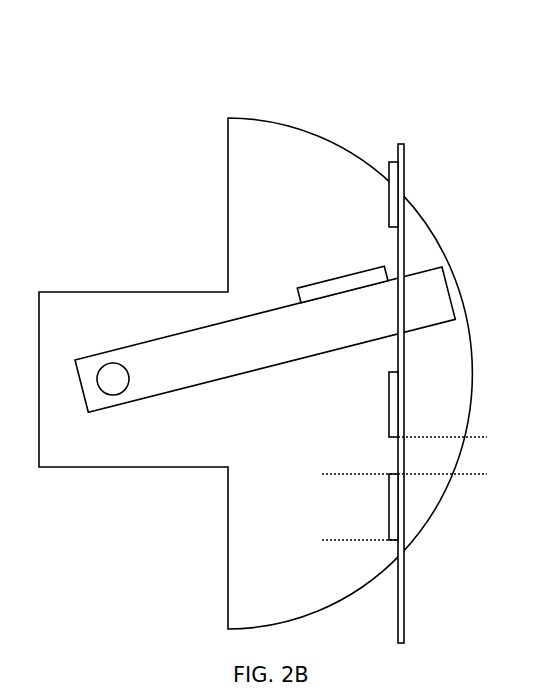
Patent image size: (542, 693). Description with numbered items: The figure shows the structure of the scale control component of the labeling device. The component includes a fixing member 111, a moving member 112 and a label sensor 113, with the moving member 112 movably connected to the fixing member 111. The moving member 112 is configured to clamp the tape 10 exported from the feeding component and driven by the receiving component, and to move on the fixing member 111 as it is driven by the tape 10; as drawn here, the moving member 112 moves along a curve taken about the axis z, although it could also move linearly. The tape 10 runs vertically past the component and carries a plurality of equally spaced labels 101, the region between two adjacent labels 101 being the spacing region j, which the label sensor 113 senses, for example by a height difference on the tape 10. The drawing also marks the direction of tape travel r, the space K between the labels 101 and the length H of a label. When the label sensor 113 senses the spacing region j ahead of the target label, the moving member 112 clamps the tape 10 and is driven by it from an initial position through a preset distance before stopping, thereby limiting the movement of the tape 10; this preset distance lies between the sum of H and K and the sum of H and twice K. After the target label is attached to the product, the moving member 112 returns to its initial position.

The fixing member 111 is at (263, 120).
The moving member 112 is at (202, 328).
The label sensor 113 is at (342, 278).
The axis z is at (109, 363).
The tape 10 is at (405, 182).
The labels 101 is at (389, 405).
The direction r is at (422, 358).
The spacing region j is at (398, 455).
The space between the labels K is at (477, 437).
The length of the label H is at (342, 474).